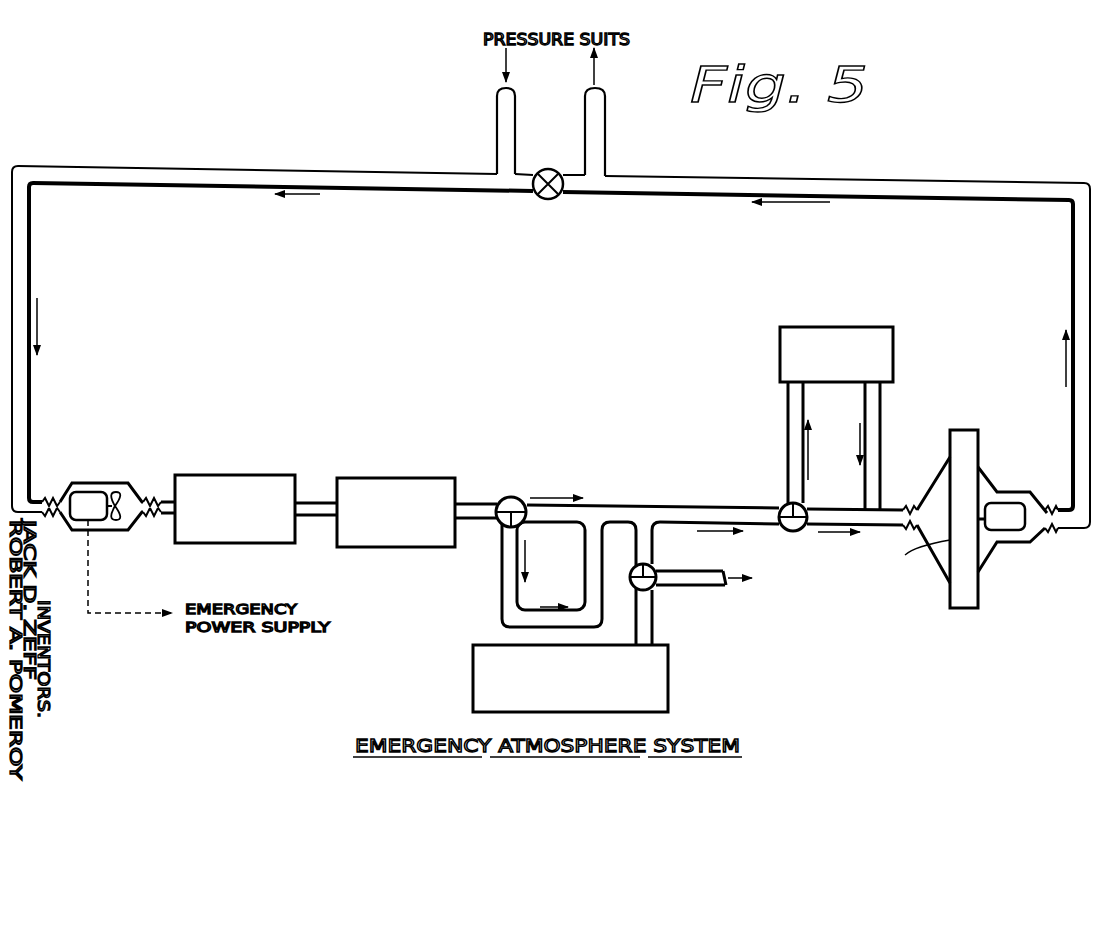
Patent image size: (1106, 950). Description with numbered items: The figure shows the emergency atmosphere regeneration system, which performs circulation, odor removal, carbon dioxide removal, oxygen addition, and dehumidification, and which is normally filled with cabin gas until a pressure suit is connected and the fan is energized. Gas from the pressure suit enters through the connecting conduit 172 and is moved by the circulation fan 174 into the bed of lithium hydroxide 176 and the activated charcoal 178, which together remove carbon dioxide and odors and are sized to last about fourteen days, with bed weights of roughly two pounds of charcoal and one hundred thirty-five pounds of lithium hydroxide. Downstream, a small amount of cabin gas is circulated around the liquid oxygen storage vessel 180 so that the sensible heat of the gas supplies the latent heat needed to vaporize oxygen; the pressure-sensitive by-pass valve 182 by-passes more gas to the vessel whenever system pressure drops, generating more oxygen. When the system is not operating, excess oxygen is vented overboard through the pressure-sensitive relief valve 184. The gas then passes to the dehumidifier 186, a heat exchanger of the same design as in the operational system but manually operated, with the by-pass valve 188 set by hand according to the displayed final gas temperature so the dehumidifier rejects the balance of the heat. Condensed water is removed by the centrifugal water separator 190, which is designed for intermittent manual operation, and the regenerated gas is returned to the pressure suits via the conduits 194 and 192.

The connecting conduit 172 is at (500, 131).
The circulation fan 174 is at (93, 500).
The bed of lithium hydroxide 176 is at (243, 477).
The activated charcoal 178 is at (388, 478).
The liquid oxygen storage vessel 180 is at (662, 688).
The pressure-sensitive by-pass valve 182 is at (505, 497).
The pressure-sensitive relief valve 184 is at (655, 588).
The dehumidifier 186 is at (853, 327).
The by-pass valve 188 is at (780, 503).
The centrifugal water separator 190 is at (990, 560).
The conduit 192 is at (598, 140).
The conduit 194 is at (935, 190).